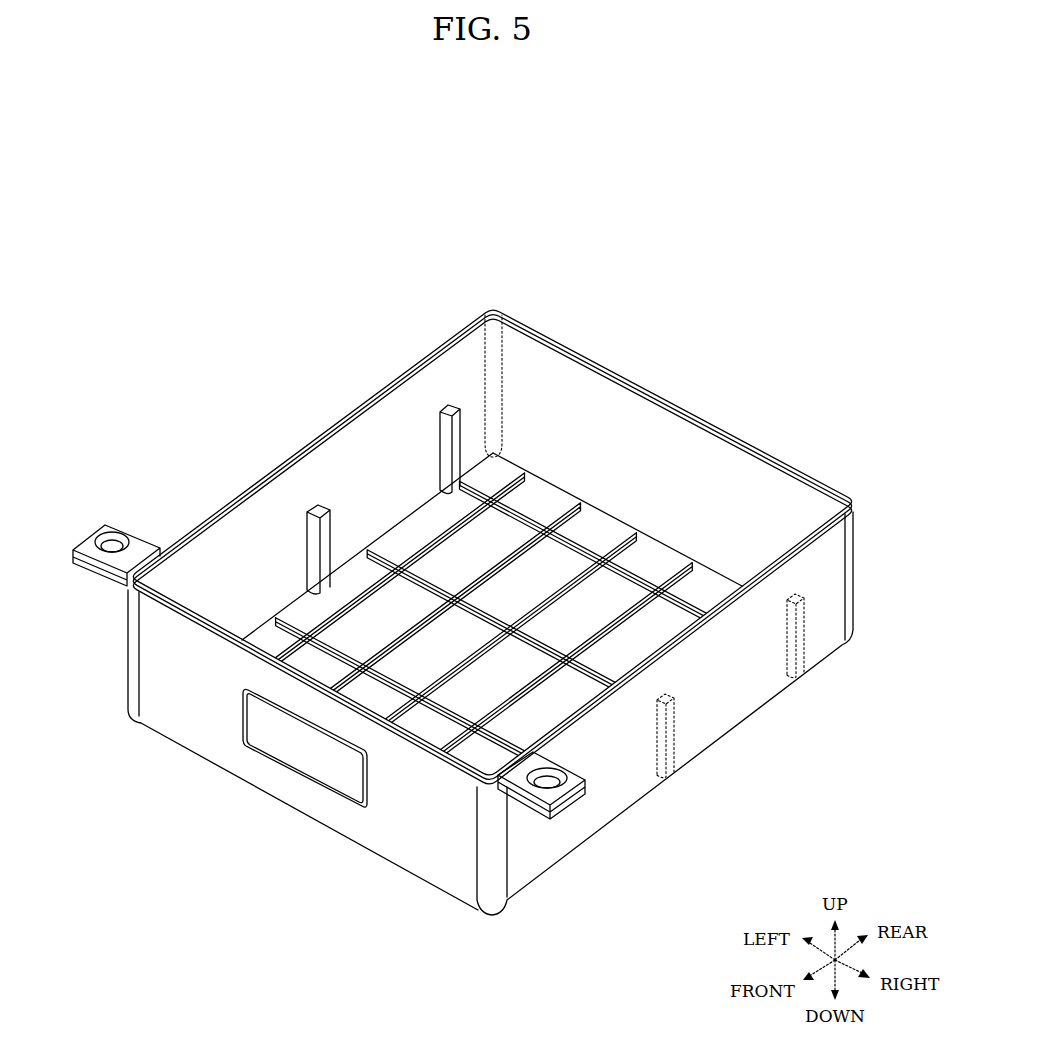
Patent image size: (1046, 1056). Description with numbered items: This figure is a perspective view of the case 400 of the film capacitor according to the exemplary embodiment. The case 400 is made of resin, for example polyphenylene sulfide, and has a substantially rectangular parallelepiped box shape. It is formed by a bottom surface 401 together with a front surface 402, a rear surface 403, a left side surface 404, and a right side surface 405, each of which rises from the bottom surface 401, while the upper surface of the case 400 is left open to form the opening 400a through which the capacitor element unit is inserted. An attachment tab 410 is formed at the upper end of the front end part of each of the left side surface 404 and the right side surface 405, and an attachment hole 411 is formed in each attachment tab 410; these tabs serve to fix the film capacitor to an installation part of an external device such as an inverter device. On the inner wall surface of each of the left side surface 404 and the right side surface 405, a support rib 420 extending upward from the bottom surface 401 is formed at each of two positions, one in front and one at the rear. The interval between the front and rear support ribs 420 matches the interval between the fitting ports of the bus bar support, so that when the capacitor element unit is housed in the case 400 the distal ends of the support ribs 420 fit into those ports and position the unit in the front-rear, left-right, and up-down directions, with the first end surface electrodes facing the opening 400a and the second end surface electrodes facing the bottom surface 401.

The case 400 is at (499, 579).
The opening 400a is at (728, 460).
The bottom surface 401 is at (532, 567).
The front surface 402 is at (280, 777).
The rear surface 403 is at (665, 396).
The left side surface 404 is at (298, 445).
The right side surface 405 is at (727, 708).
The attachment tab 410 is at (140, 533).
The attachment hole 411 is at (103, 537).
The support rib 420 is at (437, 460).